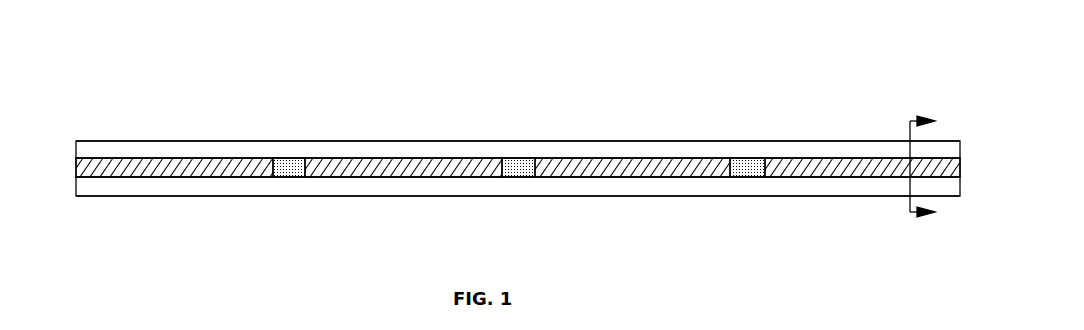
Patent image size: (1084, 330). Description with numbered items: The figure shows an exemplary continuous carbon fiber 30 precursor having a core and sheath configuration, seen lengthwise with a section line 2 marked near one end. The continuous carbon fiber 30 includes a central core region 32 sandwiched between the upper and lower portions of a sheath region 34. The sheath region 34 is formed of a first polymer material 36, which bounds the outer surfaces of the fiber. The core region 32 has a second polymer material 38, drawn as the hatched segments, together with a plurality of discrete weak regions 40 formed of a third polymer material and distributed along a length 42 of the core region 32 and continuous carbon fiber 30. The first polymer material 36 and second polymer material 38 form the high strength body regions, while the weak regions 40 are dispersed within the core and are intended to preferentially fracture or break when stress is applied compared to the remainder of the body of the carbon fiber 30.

The continuous carbon fiber 30 is at (139, 61).
The core region 32 is at (74, 159).
The sheath region 34 is at (74, 142).
The first polymer material 36 is at (620, 153).
The second polymer material 38 is at (203, 165).
The weak regions 40 is at (297, 166).
The length 42 is at (958, 235).
The section line 2- 2 is at (931, 168).